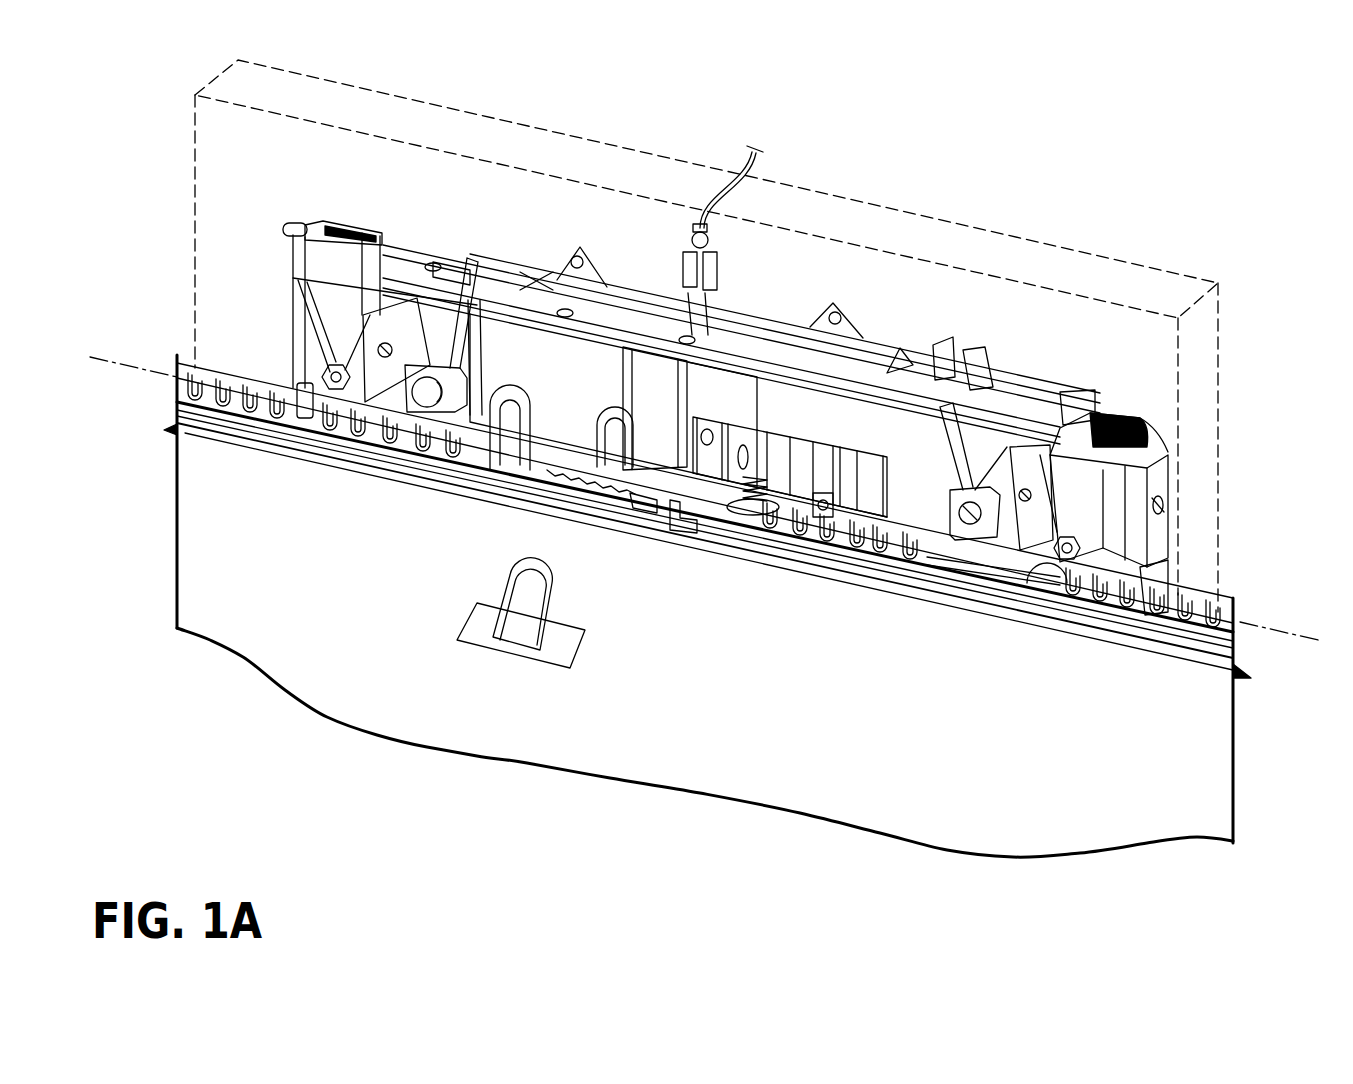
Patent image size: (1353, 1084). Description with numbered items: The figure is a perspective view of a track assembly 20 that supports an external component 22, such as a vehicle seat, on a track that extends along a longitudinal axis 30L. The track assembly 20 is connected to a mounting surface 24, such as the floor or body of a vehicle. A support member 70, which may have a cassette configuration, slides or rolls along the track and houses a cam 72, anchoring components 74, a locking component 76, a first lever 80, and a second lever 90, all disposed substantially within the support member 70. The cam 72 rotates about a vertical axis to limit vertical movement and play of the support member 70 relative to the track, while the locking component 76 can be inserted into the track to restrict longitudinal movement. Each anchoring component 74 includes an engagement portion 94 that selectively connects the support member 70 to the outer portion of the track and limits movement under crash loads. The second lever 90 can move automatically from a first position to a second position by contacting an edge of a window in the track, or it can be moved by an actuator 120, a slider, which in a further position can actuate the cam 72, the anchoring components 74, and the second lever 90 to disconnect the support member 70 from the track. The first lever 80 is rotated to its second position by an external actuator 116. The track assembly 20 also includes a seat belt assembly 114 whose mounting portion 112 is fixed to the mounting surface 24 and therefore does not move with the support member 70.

The track assembly 20 is at (1140, 204).
The external component 22 is at (1057, 268).
The mounting surface 24 is at (1097, 647).
The longitudinal axis 30L is at (142, 370).
The support member 70 is at (267, 287).
The cam 72 is at (730, 513).
The anchoring components 74 is at (463, 437).
The locking component 76 is at (577, 487).
The first lever 80 is at (690, 520).
The second lever 90 is at (633, 493).
The engagement portion 94 is at (400, 445).
The mounting portion 112 is at (477, 628).
The seat belt assembly 114 is at (513, 665).
The external actuator 116 is at (760, 146).
The actuator 120 is at (1080, 393).